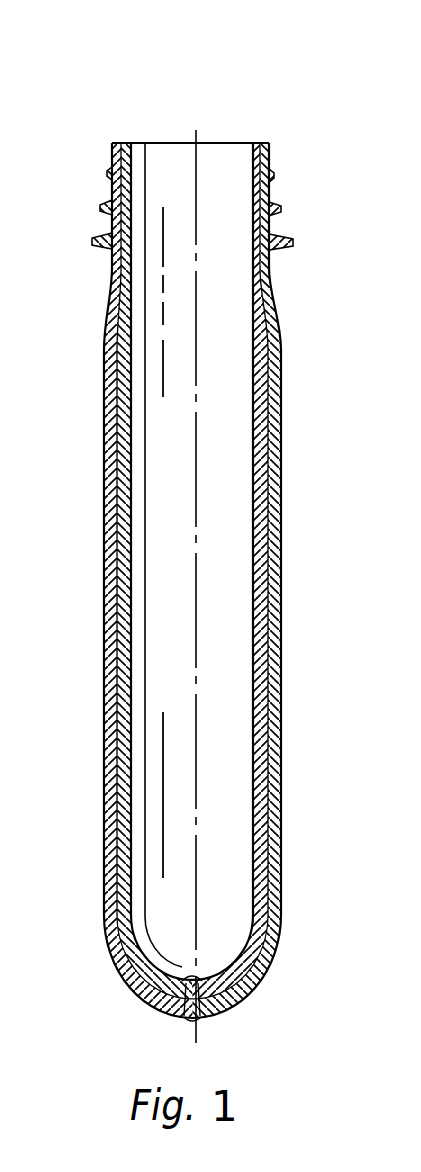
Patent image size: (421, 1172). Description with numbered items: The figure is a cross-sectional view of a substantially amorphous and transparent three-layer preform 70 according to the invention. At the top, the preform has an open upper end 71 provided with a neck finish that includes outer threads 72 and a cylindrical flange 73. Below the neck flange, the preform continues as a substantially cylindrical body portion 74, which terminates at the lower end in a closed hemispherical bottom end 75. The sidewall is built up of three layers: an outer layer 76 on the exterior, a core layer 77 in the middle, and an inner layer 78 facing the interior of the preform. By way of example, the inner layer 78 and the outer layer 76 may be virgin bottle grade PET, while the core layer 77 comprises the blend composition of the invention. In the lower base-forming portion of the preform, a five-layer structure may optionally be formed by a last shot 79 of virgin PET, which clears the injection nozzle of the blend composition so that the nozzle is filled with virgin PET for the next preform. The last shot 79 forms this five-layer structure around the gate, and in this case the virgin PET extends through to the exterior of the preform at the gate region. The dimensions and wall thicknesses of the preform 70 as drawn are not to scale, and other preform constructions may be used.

The three-layer preform 70 is at (290, 337).
The open upper end 71 is at (221, 143).
The outer threads 72 is at (273, 176).
The cylindrical flange 73 is at (281, 244).
The cylindrical body portion 74 is at (281, 482).
The closed hemispherical bottom end 75 is at (260, 988).
The outer layer 76 is at (105, 425).
The core layer 77 is at (110, 453).
The inner layer 78 is at (112, 496).
The last shot 79 is at (208, 1013).